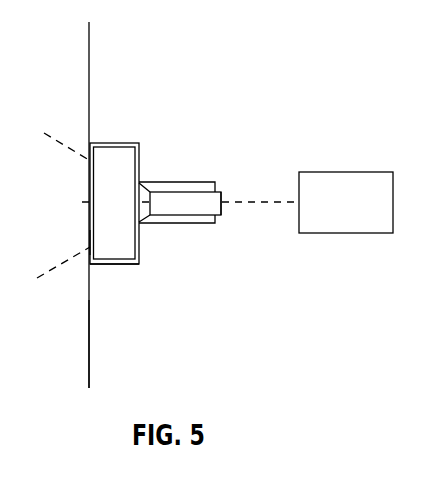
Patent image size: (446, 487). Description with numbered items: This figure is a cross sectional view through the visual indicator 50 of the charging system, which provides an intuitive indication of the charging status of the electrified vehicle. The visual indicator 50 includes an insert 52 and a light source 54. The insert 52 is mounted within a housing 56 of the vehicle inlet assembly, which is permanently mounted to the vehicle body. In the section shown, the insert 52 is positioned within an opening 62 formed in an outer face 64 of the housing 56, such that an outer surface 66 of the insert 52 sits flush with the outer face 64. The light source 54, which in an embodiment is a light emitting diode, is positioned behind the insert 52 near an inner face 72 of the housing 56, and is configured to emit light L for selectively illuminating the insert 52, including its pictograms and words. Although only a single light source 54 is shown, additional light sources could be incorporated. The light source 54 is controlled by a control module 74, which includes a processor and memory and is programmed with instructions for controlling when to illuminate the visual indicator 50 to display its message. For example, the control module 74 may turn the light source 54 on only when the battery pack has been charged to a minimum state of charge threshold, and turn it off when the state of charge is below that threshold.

The visual indicator 50 is at (80, 267).
The insert 52 is at (115, 156).
The light source 54 is at (178, 200).
The housing 56 is at (96, 71).
The opening 62 is at (110, 265).
The outer face 64 is at (88, 370).
The outer surface 66 is at (91, 242).
The inner face 72 is at (222, 185).
The control module 74 is at (350, 172).
The light L is at (41, 128).